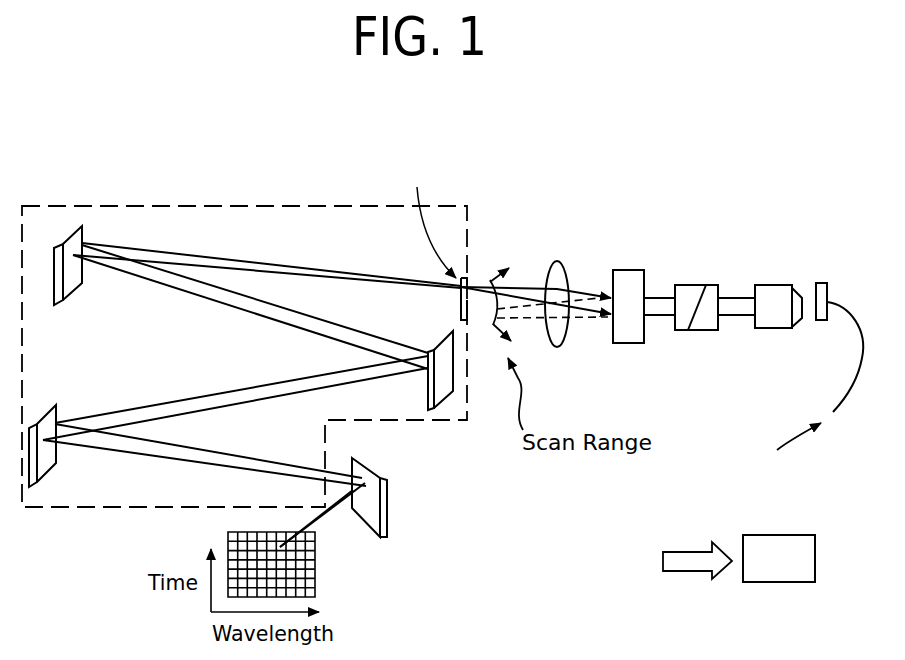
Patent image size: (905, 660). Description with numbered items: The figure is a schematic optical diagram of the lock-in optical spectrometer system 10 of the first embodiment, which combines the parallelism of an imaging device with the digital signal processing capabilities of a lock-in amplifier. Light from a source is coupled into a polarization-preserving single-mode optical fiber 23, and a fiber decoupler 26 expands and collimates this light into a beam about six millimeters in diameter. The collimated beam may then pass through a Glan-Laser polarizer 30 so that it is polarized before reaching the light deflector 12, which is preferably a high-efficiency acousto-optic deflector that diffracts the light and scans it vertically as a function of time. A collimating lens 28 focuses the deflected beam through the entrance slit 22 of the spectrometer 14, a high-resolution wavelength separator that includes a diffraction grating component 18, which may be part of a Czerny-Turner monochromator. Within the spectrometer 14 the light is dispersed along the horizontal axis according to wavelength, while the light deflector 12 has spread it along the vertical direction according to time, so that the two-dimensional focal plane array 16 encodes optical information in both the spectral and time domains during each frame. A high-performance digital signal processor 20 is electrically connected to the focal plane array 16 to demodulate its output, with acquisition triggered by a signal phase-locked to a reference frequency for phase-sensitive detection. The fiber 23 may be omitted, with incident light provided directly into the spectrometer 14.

The optical system 10 is at (230, 151).
The light deflector 12 is at (646, 270).
The spectrometer 14 is at (58, 507).
The focal plane array 16 is at (388, 487).
The diffraction grating component 18 is at (448, 395).
The digital signal processor 20 is at (782, 583).
The entrance slit 22 is at (466, 278).
The polarization-preserving single-mode optical fiber 23 is at (843, 396).
The fiber decoupler 26 is at (795, 285).
The collimating lens 28 is at (563, 345).
The Glan-Laser polarizer 30 is at (719, 285).